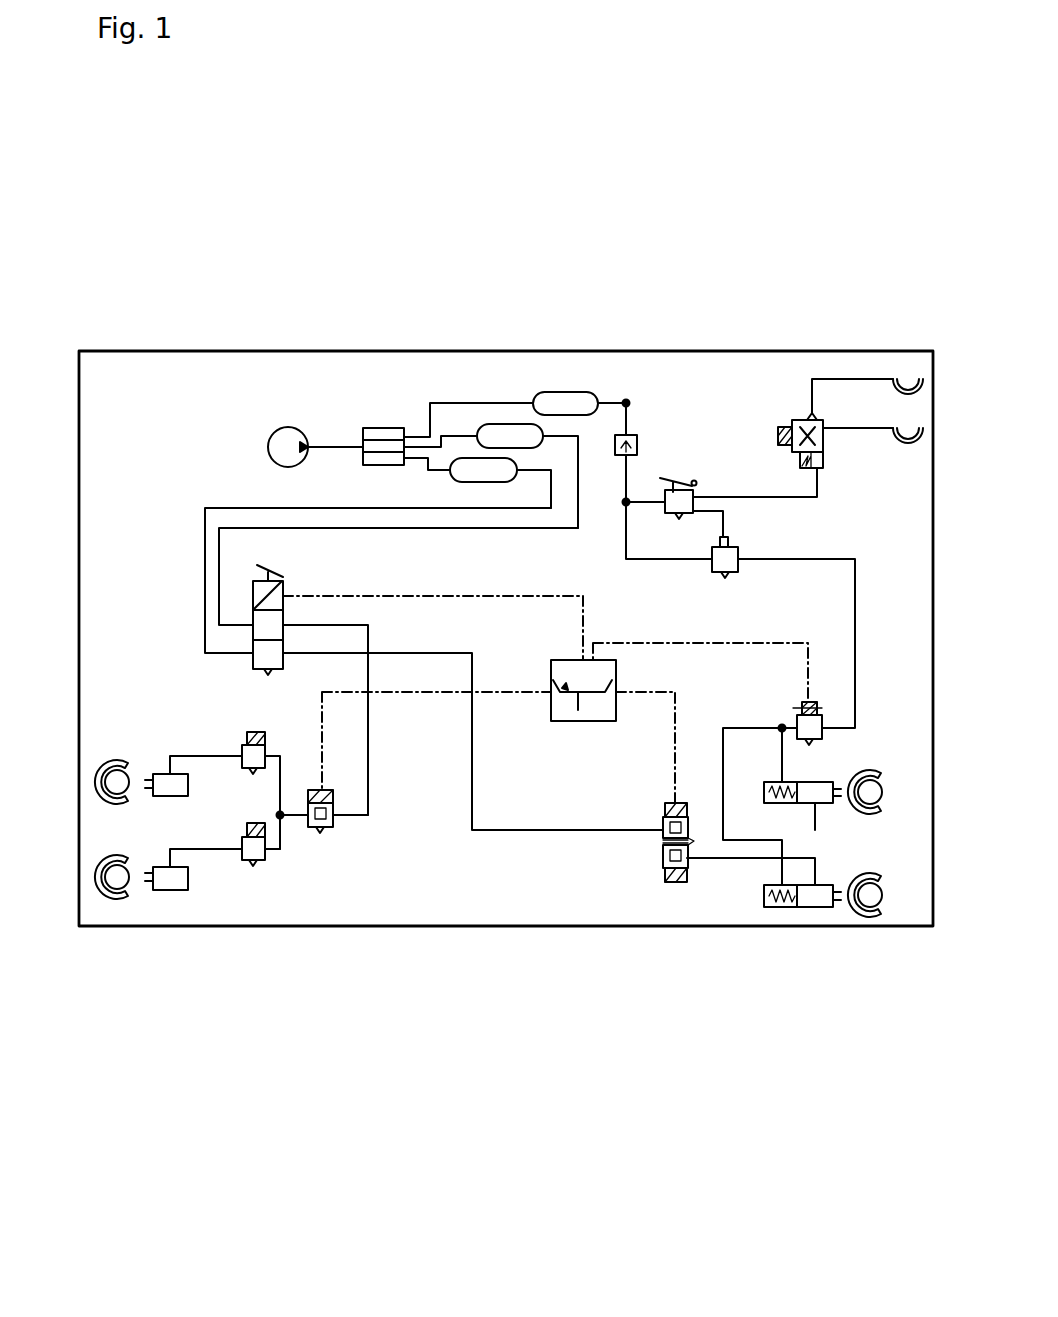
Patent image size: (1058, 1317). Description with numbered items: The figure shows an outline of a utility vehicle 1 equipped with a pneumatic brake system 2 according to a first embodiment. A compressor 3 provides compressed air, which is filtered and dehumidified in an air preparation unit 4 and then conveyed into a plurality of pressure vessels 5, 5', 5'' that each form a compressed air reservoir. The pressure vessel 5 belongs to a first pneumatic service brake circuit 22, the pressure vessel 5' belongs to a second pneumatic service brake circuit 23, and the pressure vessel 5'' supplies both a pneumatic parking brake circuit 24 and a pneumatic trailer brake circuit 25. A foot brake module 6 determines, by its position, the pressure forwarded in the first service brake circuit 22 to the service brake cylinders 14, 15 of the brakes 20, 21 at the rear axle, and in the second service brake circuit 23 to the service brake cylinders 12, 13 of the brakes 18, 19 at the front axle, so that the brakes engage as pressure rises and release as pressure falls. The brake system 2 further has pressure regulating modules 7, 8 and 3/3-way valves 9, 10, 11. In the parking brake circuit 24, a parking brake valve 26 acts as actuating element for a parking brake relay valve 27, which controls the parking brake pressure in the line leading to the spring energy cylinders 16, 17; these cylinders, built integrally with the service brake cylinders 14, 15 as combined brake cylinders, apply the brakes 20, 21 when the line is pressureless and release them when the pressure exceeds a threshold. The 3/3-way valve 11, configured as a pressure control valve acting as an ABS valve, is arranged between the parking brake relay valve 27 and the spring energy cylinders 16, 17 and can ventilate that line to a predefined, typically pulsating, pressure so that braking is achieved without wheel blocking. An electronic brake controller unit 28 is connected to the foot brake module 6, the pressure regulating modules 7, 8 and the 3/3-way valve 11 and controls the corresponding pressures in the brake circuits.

The utility vehicle 1 is at (715, 350).
The brake system 2 is at (631, 358).
The compressor 3 is at (283, 440).
The air preparation unit 4 is at (390, 428).
The pressure vessel 5 is at (475, 351).
The pressure vessel 5' is at (491, 343).
The pressure vessel 5'' is at (515, 284).
The foot brake module 6 is at (267, 618).
The pressure regulating module 7 is at (327, 827).
The pressure regulating module 8 is at (662, 842).
The 3/3-way valve 9 is at (250, 852).
The 3/3-way valve 10 is at (245, 757).
The 3/3-way valve 11 is at (790, 732).
The service brake cylinder 12 is at (167, 780).
The service brake cylinder 13 is at (167, 880).
The service brake cylinder 14 is at (812, 788).
The service brake cylinder 15 is at (815, 900).
The spring energy cylinder 16 is at (787, 797).
The spring energy cylinder 17 is at (787, 903).
The brake 18 is at (124, 774).
The brake 19 is at (123, 878).
The brake 20 is at (855, 778).
The brake 21 is at (863, 910).
The first pneumatic service brake circuit 22 is at (237, 507).
The second pneumatic service brake circuit 23 is at (217, 553).
The pneumatic parking brake circuit 24 is at (787, 558).
The pneumatic trailer brake circuit 25 is at (753, 428).
The parking brake valve 26 is at (670, 483).
The parking brake relay valve 27 is at (728, 560).
The electronic brake controller unit 28 is at (592, 673).